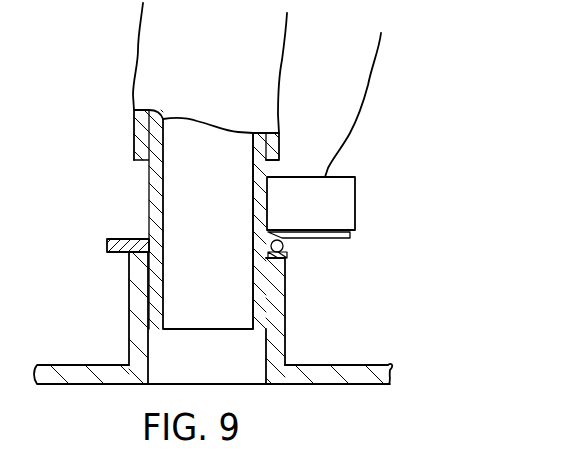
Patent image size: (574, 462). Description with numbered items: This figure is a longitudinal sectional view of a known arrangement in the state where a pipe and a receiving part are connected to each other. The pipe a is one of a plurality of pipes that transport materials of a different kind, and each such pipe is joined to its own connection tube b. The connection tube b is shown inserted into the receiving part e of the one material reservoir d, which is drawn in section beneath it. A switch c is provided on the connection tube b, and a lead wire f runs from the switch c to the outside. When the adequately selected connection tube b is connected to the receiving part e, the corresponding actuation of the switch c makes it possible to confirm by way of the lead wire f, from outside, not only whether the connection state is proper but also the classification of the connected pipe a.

The pipe a is at (263, 75).
The connection tube b is at (148, 198).
The switch c is at (356, 200).
The material reservoir d is at (389, 365).
The receiving part e is at (287, 305).
The lead wire f is at (363, 100).